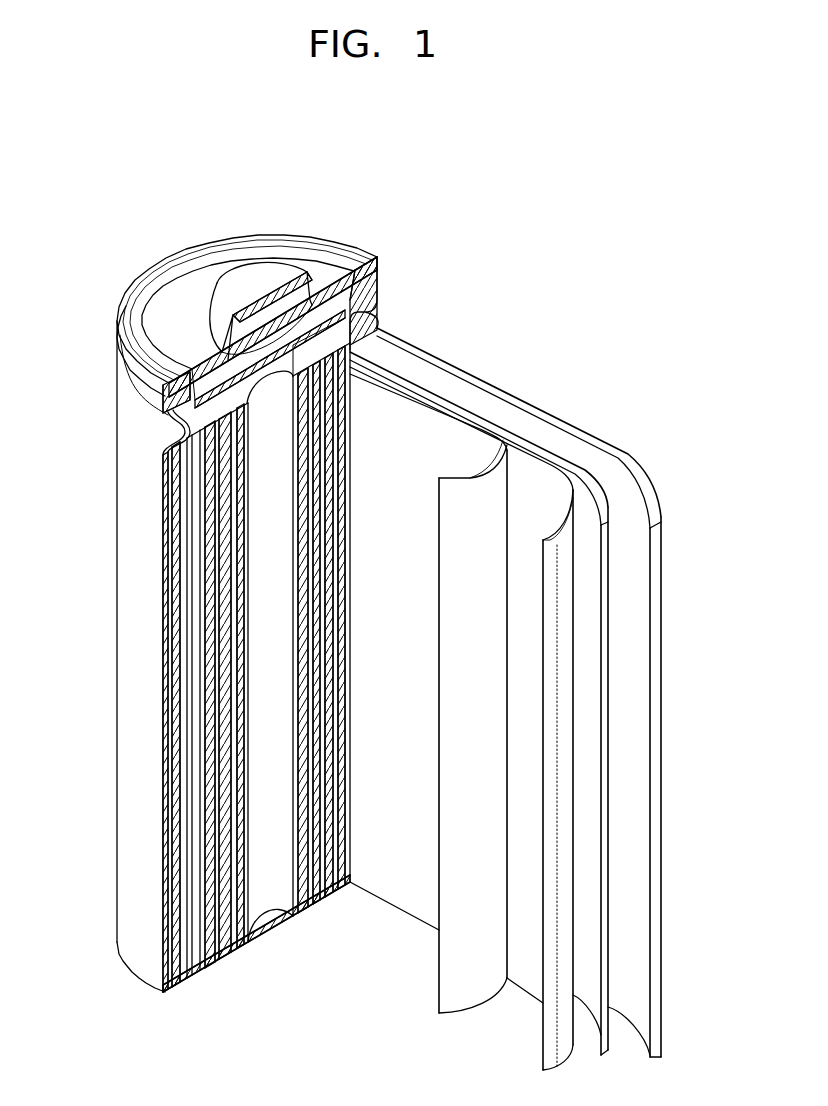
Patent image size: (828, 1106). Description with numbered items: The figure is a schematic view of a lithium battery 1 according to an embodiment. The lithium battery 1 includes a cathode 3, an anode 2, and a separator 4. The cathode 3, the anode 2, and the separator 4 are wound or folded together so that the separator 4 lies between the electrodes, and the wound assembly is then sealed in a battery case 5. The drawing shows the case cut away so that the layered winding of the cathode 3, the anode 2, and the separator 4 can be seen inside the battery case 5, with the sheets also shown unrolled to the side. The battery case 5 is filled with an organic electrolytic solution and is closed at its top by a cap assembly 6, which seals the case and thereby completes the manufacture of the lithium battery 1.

The lithium battery 1 is at (556, 263).
The anode 2 is at (645, 503).
The cathode 3 is at (533, 457).
The separator 4 is at (472, 483).
The battery case 5 is at (128, 663).
The cap assembly 6 is at (243, 273).